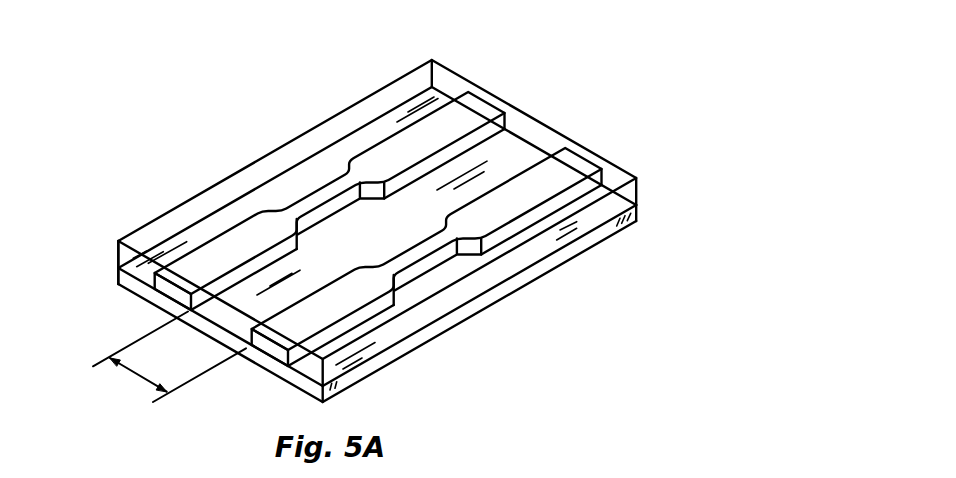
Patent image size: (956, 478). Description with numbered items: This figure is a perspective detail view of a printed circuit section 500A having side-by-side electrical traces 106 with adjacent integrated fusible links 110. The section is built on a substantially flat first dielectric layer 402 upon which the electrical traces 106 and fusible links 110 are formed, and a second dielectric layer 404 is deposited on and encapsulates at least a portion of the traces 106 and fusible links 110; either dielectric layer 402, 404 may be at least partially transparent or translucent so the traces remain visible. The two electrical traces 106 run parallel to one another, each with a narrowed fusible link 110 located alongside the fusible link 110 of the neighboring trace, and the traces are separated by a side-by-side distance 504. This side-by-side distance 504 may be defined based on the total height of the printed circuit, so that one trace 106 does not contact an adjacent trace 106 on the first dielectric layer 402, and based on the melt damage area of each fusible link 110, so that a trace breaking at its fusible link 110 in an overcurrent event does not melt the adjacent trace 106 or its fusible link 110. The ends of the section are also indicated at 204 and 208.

The printed circuit section 500A is at (592, 95).
The first dielectric layer 402 is at (403, 353).
The second dielectric layer 404 is at (353, 104).
The second end of substrate 204 is at (420, 58).
The first end of substrate 208 is at (116, 237).
The electrical trace 106 is at (467, 110).
The fusible link 110 is at (313, 192).
The side-by-side distance 504 is at (132, 375).